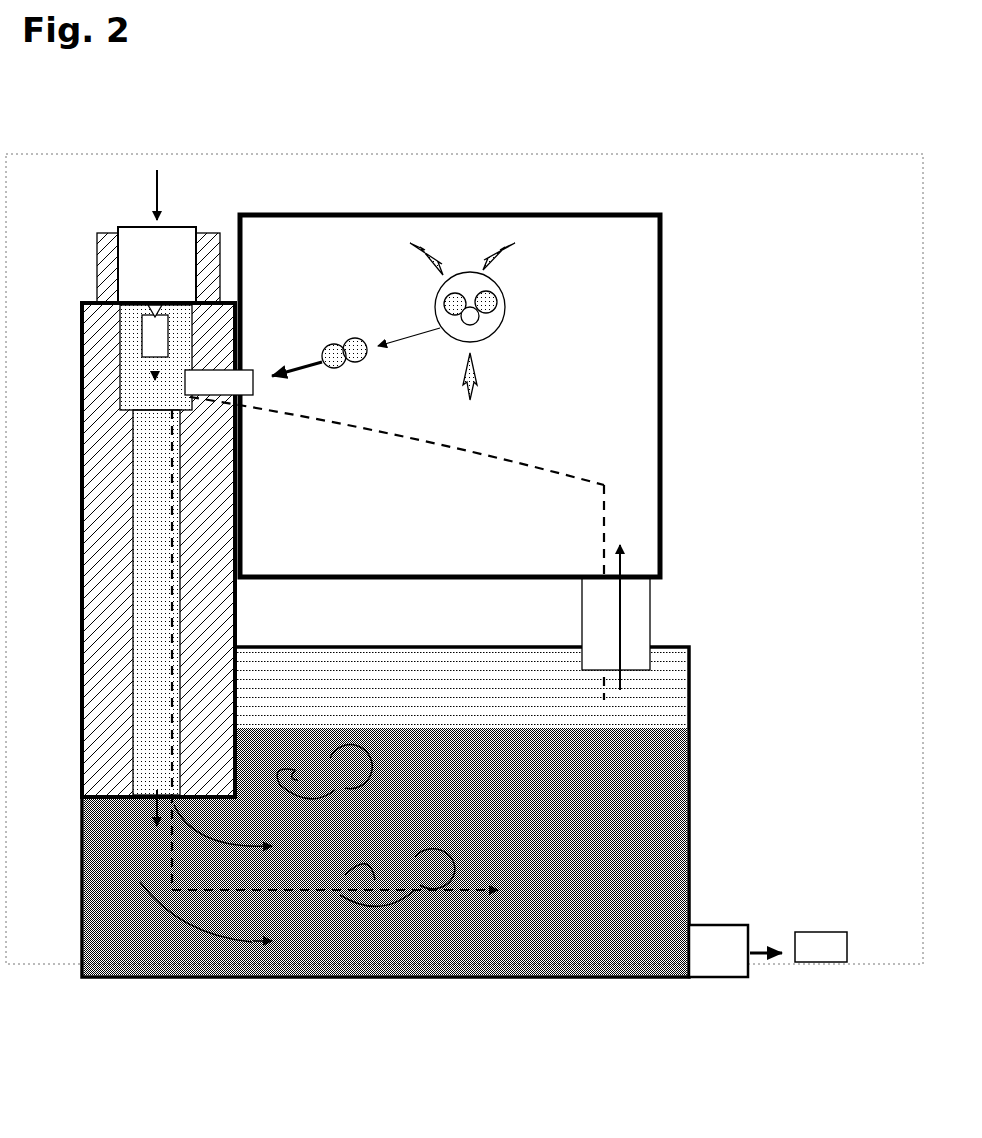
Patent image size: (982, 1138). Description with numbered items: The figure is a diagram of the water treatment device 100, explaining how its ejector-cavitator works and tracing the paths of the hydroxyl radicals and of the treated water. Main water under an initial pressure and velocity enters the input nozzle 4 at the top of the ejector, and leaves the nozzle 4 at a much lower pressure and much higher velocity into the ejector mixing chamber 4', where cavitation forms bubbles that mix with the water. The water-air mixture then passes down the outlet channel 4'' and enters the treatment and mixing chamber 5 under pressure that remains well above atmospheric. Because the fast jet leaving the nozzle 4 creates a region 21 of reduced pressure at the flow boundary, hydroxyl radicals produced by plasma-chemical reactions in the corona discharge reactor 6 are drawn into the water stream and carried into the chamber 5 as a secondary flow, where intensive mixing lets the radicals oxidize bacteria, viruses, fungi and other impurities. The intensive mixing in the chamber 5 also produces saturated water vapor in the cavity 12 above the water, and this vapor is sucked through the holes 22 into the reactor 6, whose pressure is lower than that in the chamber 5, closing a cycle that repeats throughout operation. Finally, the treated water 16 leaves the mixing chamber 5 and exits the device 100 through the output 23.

The device 100 is at (101, 87).
The input nozzle 4 is at (311, 483).
The ejector mixing chamber 4' is at (112, 357).
The outlet channel 4'' is at (99, 602).
The region of reduced pressure 21 is at (160, 402).
The corona discharge reactor 6 is at (664, 212).
The holes 22 is at (654, 605).
The cavity 12 is at (666, 675).
The treatment and mixing chamber 5 is at (691, 770).
The output 23 is at (732, 925).
The water 16 is at (848, 948).